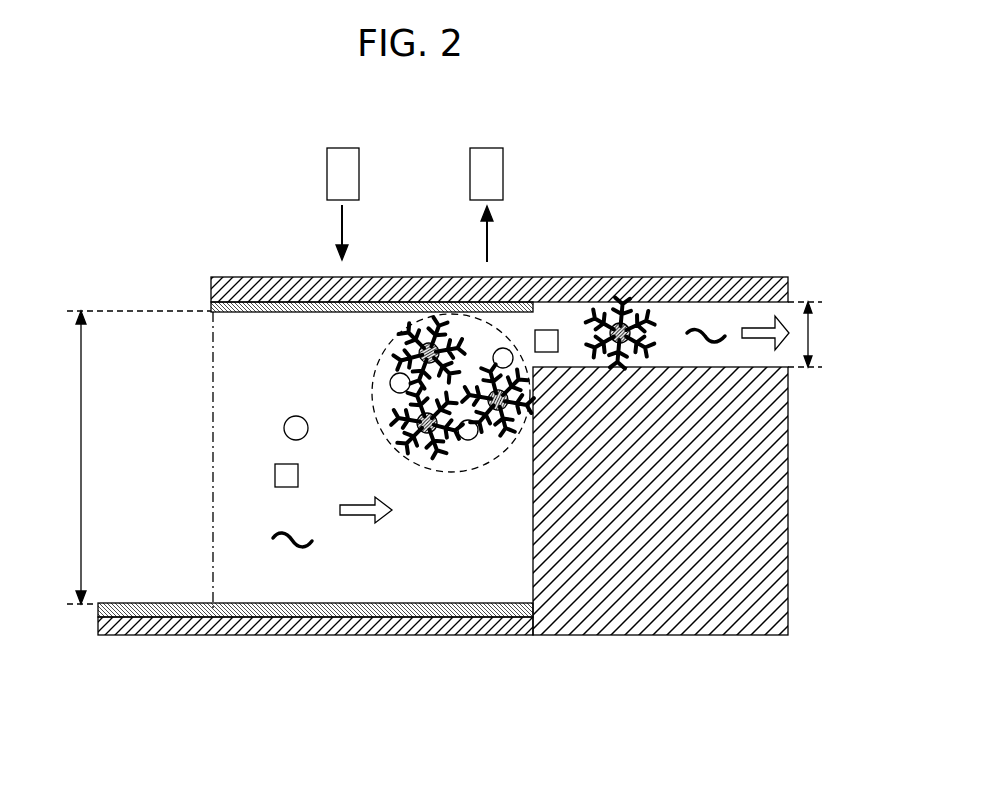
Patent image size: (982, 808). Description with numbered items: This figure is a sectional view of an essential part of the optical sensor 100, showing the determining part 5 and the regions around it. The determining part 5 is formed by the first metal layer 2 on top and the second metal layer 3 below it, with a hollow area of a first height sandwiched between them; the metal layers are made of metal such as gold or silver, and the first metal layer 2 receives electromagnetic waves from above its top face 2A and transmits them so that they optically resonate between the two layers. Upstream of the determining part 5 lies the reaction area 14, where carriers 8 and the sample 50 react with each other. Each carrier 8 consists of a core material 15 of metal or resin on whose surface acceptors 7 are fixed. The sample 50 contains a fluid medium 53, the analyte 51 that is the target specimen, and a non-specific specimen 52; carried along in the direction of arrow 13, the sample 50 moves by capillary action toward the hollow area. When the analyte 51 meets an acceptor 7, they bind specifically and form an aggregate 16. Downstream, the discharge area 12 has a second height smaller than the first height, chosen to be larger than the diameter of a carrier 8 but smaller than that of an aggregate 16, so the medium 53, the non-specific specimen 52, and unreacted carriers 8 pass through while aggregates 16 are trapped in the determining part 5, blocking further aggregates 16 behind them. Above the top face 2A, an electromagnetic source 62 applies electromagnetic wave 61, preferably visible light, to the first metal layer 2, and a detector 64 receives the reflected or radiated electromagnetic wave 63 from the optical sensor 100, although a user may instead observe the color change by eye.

The optical sensor 100 is at (447, 406).
The first metal layer 2 is at (218, 302).
The top face 2A is at (268, 300).
The second metal layer 3 is at (118, 613).
The determining part 5 is at (215, 565).
The acceptor 7 is at (422, 460).
The carrier 8 is at (516, 477).
The discharge area 12 is at (740, 320).
The arrow 13 is at (358, 517).
The reaction area 14 is at (137, 337).
The core material 15 is at (459, 532).
The aggregate 16 is at (505, 330).
The sample 50 is at (415, 386).
The analyte 51 is at (285, 423).
The non-specific specimen 52 is at (272, 473).
The medium 53 is at (152, 387).
The electromagnetic wave 61 is at (340, 232).
The electromagnetic source 62 is at (327, 162).
The electromagnetic wave 63 is at (485, 233).
The detector 64 is at (470, 162).